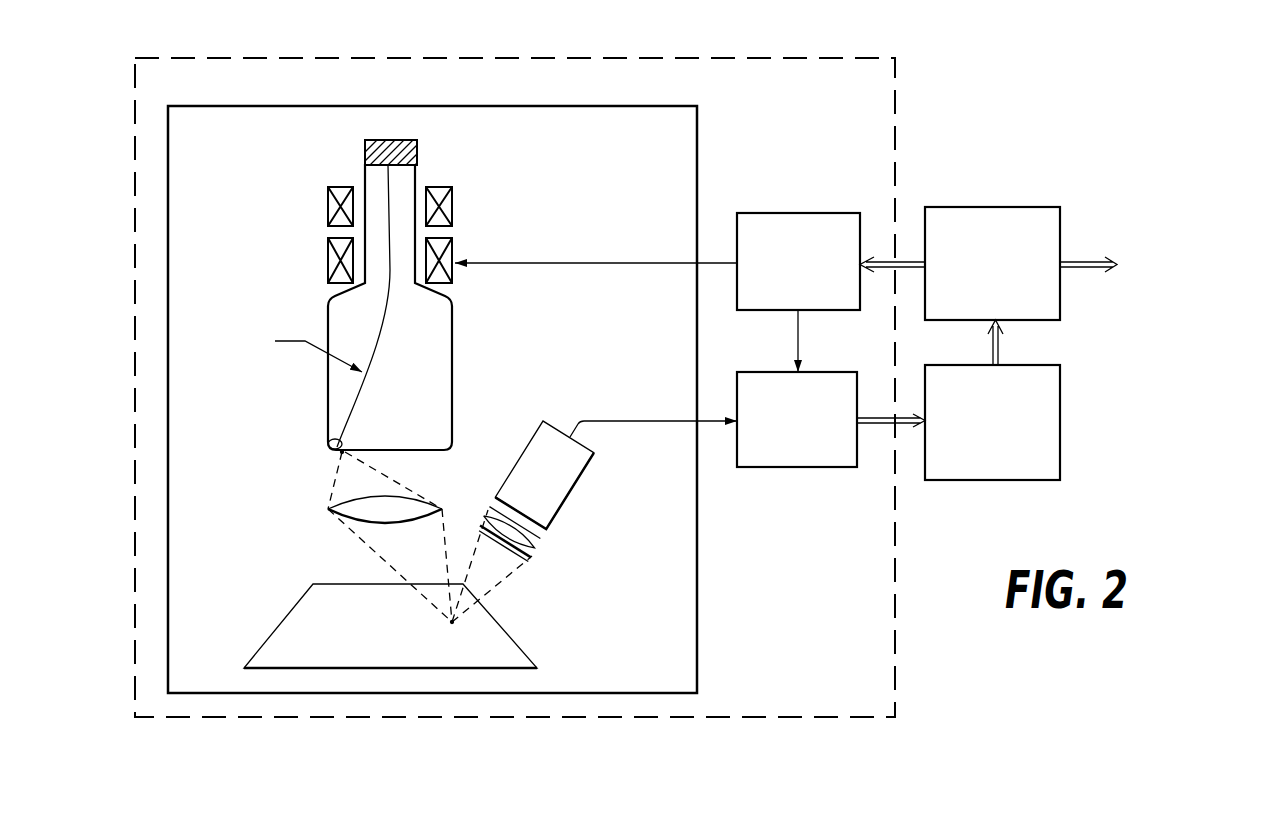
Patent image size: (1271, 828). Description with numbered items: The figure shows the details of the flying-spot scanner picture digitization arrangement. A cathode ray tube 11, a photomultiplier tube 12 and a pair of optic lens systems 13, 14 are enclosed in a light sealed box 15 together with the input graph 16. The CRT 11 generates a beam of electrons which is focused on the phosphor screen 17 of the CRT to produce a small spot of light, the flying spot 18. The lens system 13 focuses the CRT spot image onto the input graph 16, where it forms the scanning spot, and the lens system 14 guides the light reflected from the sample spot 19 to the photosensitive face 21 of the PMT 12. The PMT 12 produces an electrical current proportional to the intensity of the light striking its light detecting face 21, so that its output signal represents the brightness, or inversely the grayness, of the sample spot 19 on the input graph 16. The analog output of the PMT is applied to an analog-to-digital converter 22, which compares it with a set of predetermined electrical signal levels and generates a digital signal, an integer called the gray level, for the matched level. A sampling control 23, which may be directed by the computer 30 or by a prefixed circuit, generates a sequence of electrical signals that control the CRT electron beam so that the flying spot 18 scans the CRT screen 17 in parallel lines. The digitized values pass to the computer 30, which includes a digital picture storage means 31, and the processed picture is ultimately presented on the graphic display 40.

The cathode ray tube 11 is at (460, 345).
The photomultiplier tube 12 is at (572, 478).
The lens system 13 is at (323, 519).
The lens system 14 is at (535, 558).
The light sealed box 15 is at (444, 118).
The input graph 16 is at (284, 613).
The phosphor screen 17 is at (328, 446).
The flying spot 18 is at (338, 459).
The sample spot 19 is at (468, 628).
The photosensitive face 21 is at (546, 533).
The analog-to-digital converter 22 is at (831, 419).
The sampling control 23 is at (657, 292).
The computer 30 is at (960, 263).
The digital picture storage means 31 is at (992, 400).
The graphic display 40 is at (1153, 293).